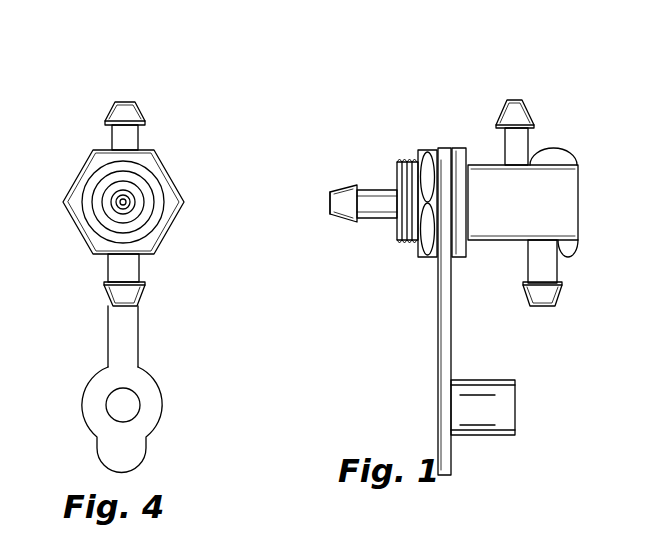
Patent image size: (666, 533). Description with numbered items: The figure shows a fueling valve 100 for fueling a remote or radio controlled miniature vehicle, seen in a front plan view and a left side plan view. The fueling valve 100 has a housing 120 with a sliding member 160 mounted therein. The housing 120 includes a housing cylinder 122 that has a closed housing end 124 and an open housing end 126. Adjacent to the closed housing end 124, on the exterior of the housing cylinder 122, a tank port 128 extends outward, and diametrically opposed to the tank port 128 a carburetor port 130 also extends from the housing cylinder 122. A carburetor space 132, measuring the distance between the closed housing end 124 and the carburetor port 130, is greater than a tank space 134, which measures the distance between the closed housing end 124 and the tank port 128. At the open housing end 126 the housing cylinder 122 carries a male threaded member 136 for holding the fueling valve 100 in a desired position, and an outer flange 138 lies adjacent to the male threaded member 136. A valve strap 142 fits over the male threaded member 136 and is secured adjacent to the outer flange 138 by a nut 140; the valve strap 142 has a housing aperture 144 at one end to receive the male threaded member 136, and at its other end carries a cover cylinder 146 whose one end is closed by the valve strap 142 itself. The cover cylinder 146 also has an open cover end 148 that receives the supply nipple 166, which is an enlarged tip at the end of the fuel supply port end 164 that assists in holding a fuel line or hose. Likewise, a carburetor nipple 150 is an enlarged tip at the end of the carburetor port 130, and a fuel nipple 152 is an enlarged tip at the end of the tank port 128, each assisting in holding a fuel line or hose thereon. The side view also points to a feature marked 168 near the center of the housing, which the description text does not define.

In FIG. 4, the fueling valve 100 is at (174, 303).
In FIG. 1, the fueling valve 100 is at (372, 127).
In FIG. 1, the housing 120 is at (555, 205).
In FIG. 1, the housing cylinder 122 is at (549, 319).
In FIG. 1, the closed housing end 124 is at (580, 192).
In FIG. 1, the open housing end 126 is at (352, 224).
In FIG. 4, the tank port 128 is at (121, 301).
In FIG. 1, the tank port 128 is at (577, 319).
In FIG. 4, the carburetor port 130 is at (117, 99).
In FIG. 1, the carburetor port 130 is at (498, 88).
In FIG. 1, the carburetor space 132 is at (548, 142).
In FIG. 1, the tank space 134 is at (572, 257).
In FIG. 1, the male threaded member 136 is at (405, 241).
In FIG. 1, the outer flange 138 is at (460, 148).
In FIG. 4, the nut 140 is at (135, 389).
In FIG. 1, the nut 140 is at (452, 357).
In FIG. 4, the valve strap 142 is at (97, 167).
In FIG. 1, the valve strap 142 is at (425, 260).
In FIG. 1, the housing aperture 144 is at (441, 147).
In FIG. 1, the cover cylinder 146 is at (517, 410).
In FIG. 4, the open cover end 148 is at (113, 407).
In FIG. 4, the carburetor nipple 150 is at (110, 107).
In FIG. 1, the carburetor nipple 150 is at (517, 100).
In FIG. 4, the fuel nipple 152 is at (113, 305).
In FIG. 1, the fuel nipple 152 is at (558, 303).
In FIG. 1, the sliding member 160 is at (375, 220).
In FIG. 1, the fuel supply port end 164 is at (320, 225).
In FIG. 1, the supply nipple 166 is at (328, 193).
In FIG. 4, the passage opening 168 is at (120, 207).
In FIG. 1, the passage opening 168 is at (328, 202).